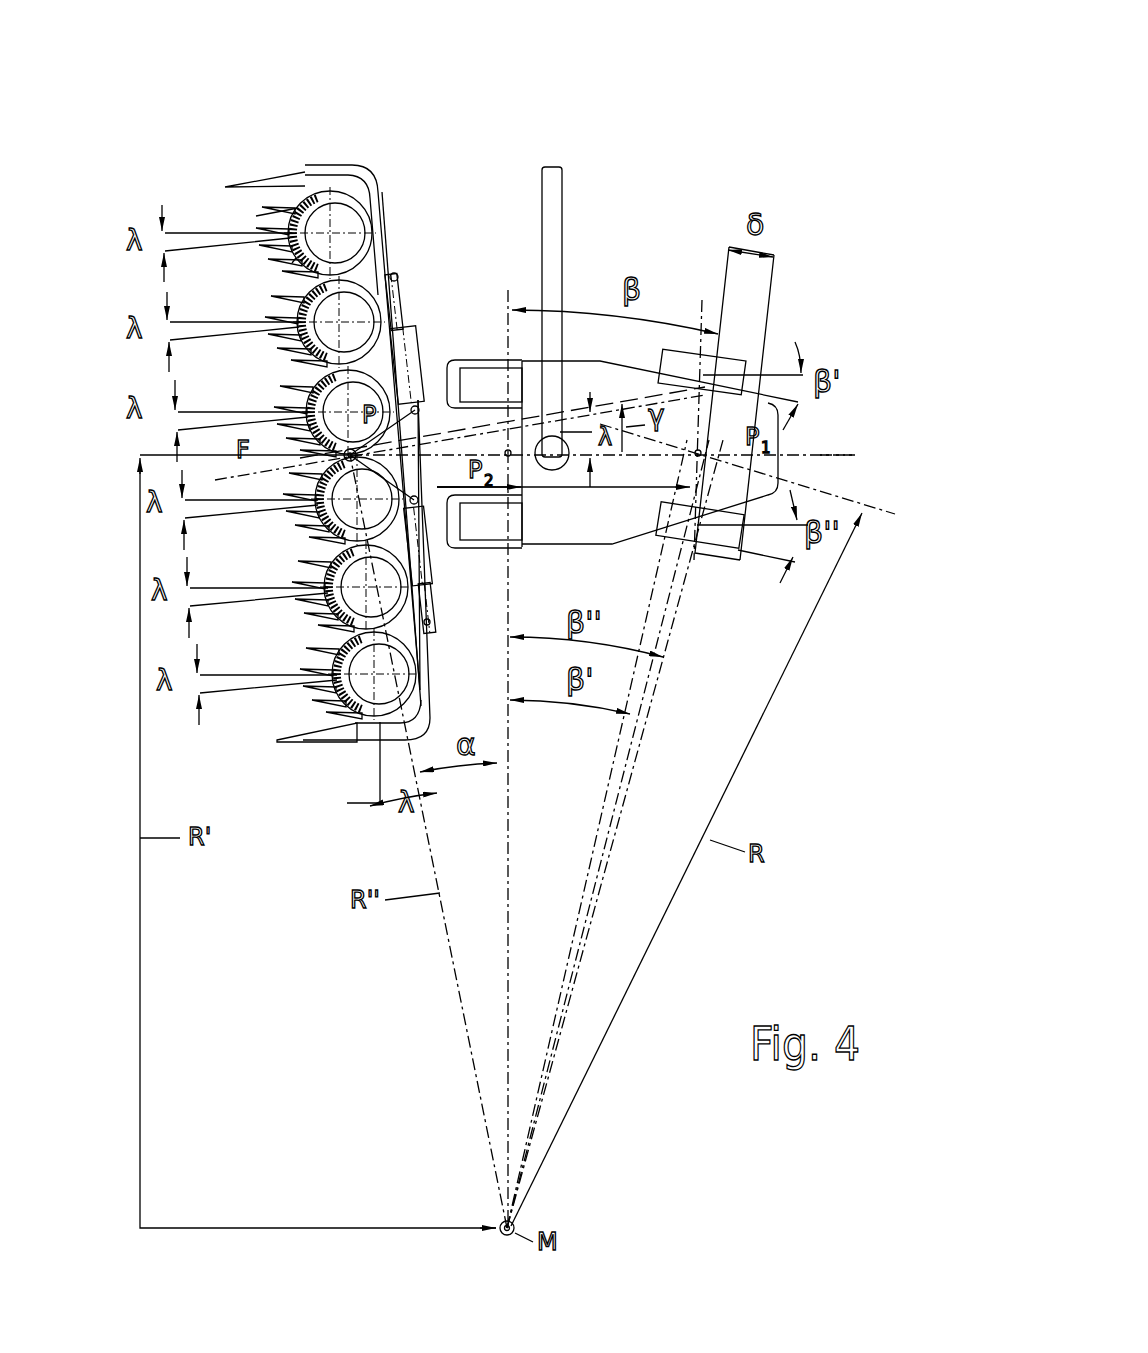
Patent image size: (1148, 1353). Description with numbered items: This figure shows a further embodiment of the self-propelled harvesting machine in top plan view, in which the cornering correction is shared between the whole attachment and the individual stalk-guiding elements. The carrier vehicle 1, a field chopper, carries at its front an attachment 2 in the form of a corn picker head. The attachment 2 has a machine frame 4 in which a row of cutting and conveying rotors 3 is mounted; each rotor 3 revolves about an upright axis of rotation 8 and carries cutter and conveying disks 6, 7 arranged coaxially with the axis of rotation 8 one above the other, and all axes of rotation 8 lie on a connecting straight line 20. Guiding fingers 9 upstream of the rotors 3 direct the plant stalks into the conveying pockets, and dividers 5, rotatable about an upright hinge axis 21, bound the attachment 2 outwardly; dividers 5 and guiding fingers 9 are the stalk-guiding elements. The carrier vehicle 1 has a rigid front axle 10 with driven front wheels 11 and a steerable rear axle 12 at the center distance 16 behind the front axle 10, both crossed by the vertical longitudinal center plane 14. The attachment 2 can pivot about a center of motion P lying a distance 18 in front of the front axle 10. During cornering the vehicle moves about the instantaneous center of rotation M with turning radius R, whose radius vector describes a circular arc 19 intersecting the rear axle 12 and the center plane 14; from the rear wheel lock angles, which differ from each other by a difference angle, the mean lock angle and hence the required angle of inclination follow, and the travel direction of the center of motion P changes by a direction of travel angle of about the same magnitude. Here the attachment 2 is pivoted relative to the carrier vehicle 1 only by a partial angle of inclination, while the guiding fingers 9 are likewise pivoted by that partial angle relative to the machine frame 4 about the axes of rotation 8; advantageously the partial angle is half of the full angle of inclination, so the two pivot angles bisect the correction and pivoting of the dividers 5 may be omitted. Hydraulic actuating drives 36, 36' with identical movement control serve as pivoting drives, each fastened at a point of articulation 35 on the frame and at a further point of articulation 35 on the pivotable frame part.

The carrier vehicle 1 is at (652, 200).
The attachment 2 is at (350, 108).
The cutting and conveying rotor 3 is at (297, 240).
The machine frame 4 is at (398, 274).
The divider 5 is at (285, 175).
The cutter disk 6 is at (292, 252).
The conveying disk 7 is at (290, 266).
The axis of rotation 8 is at (292, 263).
The guiding fingers 9 is at (262, 220).
The front axle 10 is at (512, 581).
The front wheels 11 is at (452, 360).
The rear axle 12 is at (703, 587).
The vertical longitudinal center plane 14 is at (846, 440).
The center distance 16 is at (590, 487).
The distance 18 is at (443, 471).
The circular arc 19 is at (863, 494).
The connecting straight line 20 is at (320, 172).
The upright hinge axis 21 is at (356, 744).
The point of articulation 35 is at (399, 279).
The actuating drive 36 is at (424, 339).
The actuating drive 36' is at (445, 569).